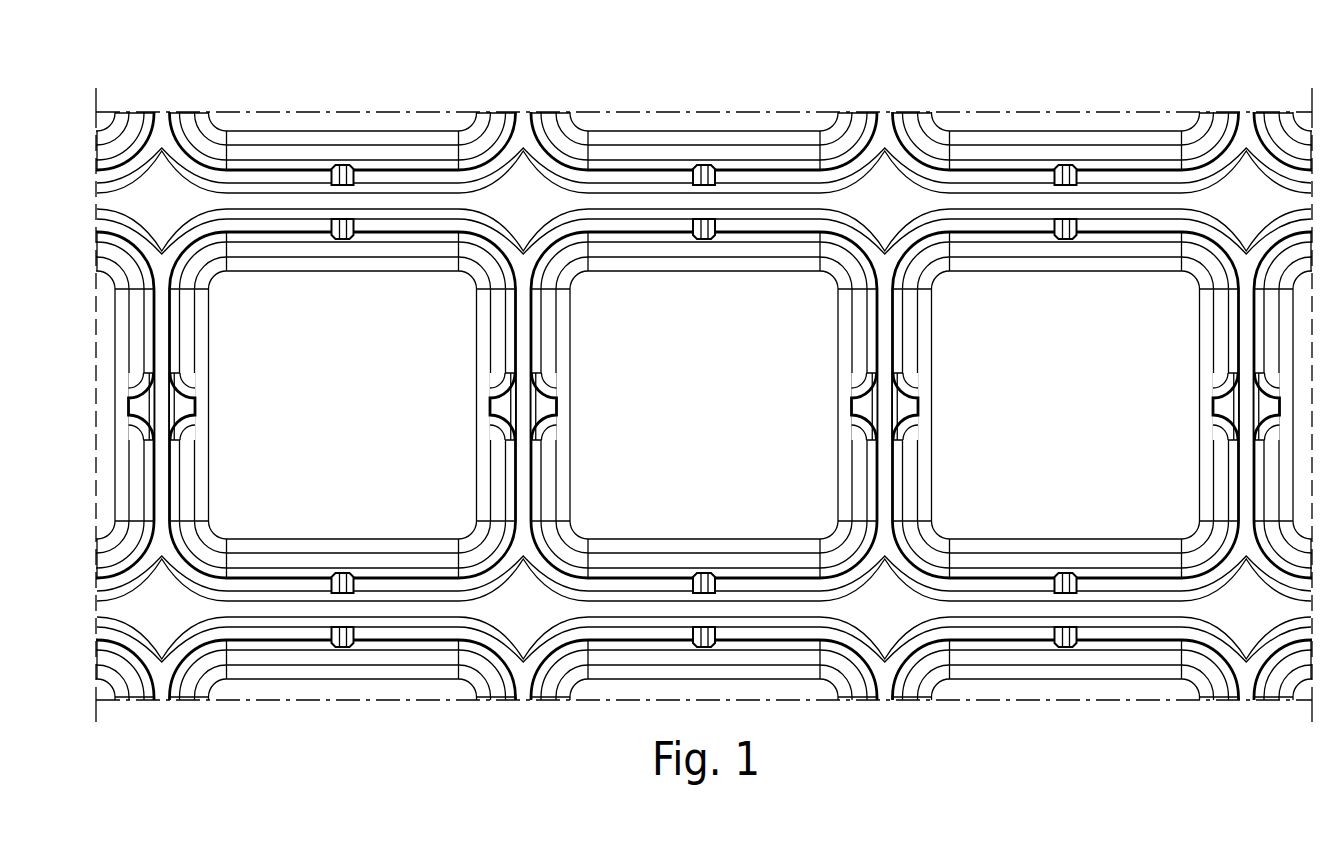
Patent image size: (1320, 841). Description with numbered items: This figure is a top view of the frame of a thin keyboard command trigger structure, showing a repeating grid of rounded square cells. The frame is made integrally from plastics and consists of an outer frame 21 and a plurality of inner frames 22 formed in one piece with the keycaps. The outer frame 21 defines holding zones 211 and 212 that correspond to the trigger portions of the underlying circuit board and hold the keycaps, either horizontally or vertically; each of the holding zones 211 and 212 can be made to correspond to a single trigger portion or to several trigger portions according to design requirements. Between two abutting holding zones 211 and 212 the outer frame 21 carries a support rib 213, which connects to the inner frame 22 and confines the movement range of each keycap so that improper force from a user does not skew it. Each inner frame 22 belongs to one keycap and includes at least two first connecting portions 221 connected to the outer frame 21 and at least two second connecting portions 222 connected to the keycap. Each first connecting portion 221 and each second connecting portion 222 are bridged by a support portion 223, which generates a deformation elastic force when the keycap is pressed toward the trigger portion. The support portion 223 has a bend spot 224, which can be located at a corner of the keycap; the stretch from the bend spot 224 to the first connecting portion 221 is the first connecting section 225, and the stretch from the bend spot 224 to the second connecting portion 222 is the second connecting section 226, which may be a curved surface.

The outer frame 21 is at (770, 202).
The inner frame 22 is at (765, 18).
The holding zone 211 is at (408, 224).
The holding zone 212 is at (408, 635).
The support rib 213 is at (1018, 612).
The first connecting portion 221 is at (1067, 228).
The second connecting portion 222 is at (903, 372).
The support portion 223 is at (912, 246).
The bend spot 224 is at (1222, 256).
The first connecting section 225 is at (1028, 240).
The second connecting section 226 is at (898, 327).